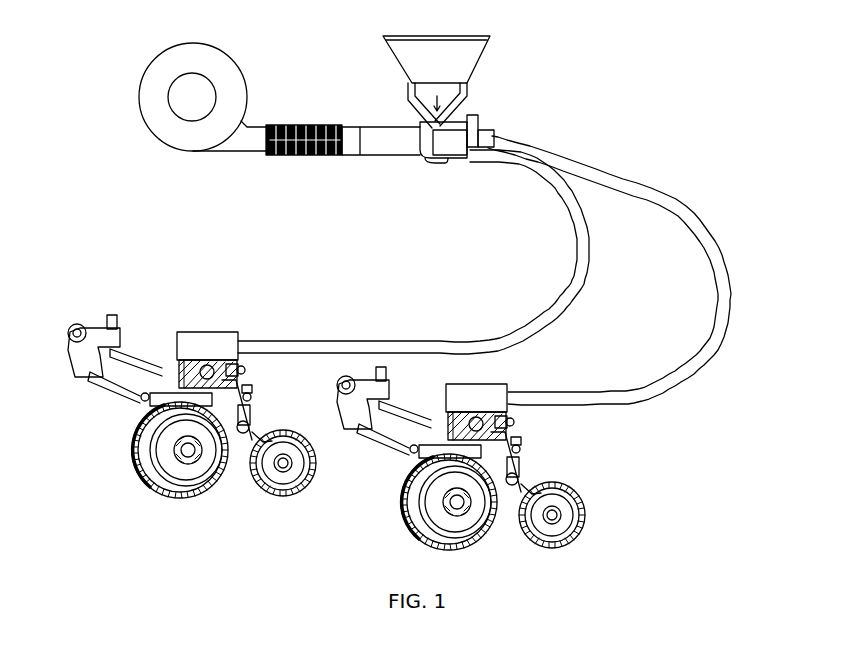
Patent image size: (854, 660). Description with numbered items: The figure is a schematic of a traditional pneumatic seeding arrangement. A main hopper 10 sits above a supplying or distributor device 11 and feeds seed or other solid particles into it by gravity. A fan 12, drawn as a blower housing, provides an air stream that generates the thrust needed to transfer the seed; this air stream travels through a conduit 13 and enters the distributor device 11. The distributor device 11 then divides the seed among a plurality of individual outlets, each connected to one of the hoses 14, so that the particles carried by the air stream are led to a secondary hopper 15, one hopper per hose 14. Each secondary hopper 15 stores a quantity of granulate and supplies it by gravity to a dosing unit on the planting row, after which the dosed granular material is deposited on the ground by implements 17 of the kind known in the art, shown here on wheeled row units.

The hopper 10 is at (473, 63).
The manifold / distributor 11 is at (485, 124).
The blower 12 is at (143, 130).
The flexible corrugated hose 13 is at (323, 124).
The seed delivery hose 14 is at (584, 267).
The seed meter box 15 is at (201, 331).
The wheel hub 17 is at (188, 436).